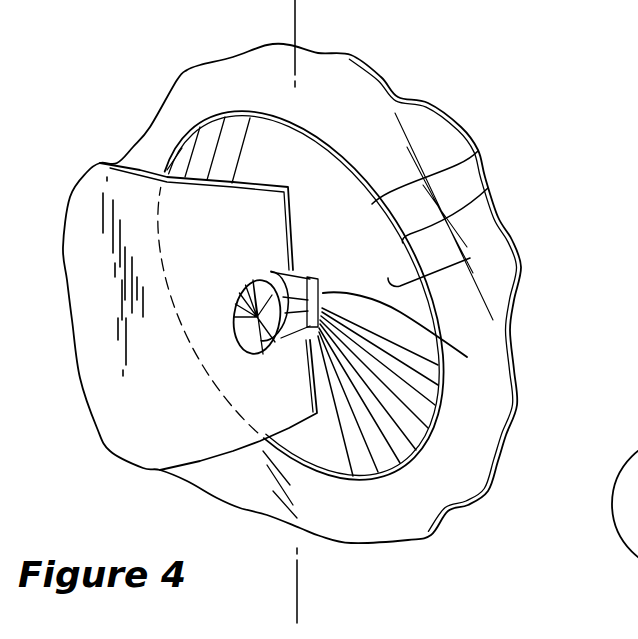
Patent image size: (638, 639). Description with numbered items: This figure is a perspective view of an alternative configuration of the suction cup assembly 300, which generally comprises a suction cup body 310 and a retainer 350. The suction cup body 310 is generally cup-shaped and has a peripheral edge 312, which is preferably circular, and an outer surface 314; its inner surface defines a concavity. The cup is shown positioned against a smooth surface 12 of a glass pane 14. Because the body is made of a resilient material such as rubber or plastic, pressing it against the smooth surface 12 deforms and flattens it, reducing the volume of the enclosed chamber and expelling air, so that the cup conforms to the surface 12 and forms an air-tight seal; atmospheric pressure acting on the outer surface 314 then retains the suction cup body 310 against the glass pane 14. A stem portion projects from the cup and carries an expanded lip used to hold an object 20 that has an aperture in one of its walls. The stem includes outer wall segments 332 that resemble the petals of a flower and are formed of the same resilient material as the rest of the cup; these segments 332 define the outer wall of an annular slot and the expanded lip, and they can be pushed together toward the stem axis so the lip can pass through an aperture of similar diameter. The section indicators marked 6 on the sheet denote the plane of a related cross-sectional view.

The section line 6- 6 is at (262, 25).
The surface 12 is at (505, 297).
The glass pane 14 is at (517, 341).
The object 20 is at (100, 163).
The suction cup assembly 300 is at (328, 120).
The suction cup body 310 is at (478, 151).
The peripheral edge 312 is at (488, 188).
The outer surface 314 is at (470, 258).
The outer wall segments 332 is at (467, 357).
The retainer 350 is at (270, 362).